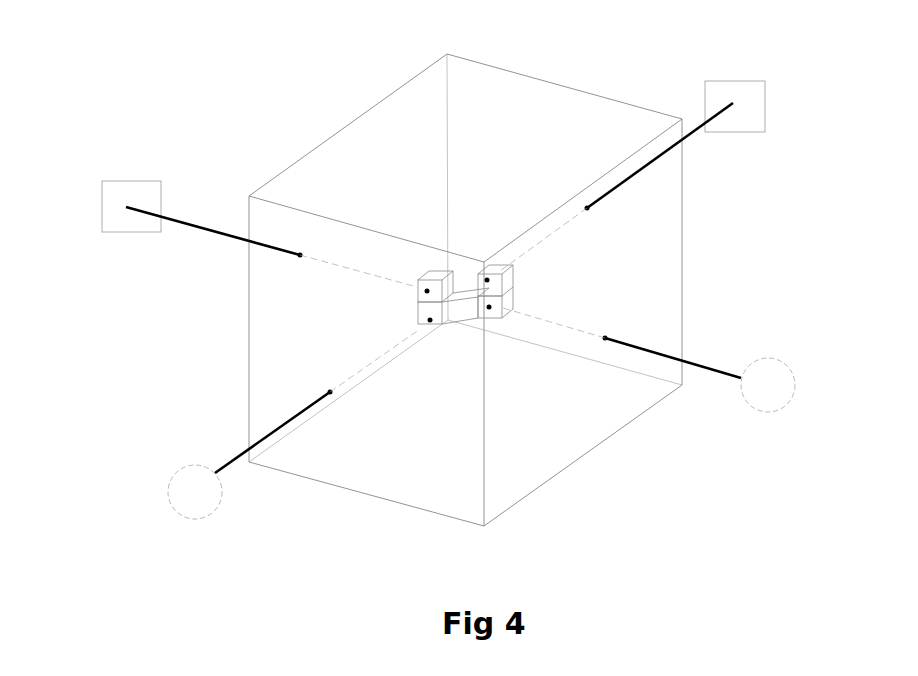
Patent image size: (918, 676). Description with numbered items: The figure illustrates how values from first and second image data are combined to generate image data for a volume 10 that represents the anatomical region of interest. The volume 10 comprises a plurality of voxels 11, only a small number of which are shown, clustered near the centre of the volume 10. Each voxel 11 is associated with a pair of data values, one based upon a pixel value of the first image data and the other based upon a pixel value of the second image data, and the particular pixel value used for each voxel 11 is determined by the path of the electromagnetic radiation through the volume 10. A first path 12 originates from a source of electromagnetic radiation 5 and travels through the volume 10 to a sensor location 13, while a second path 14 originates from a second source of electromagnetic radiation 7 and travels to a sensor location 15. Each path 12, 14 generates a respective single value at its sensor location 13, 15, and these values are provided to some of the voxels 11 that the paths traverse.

The volume 10 is at (548, 82).
The voxel 11 is at (443, 355).
The first path 12 is at (715, 367).
The sensor location 13 is at (130, 181).
The second path 14 is at (232, 458).
The sensor location 15 is at (737, 81).
The source of electromagnetic radiation 5 is at (792, 402).
The source of electromagnetic radiation 7 is at (200, 519).